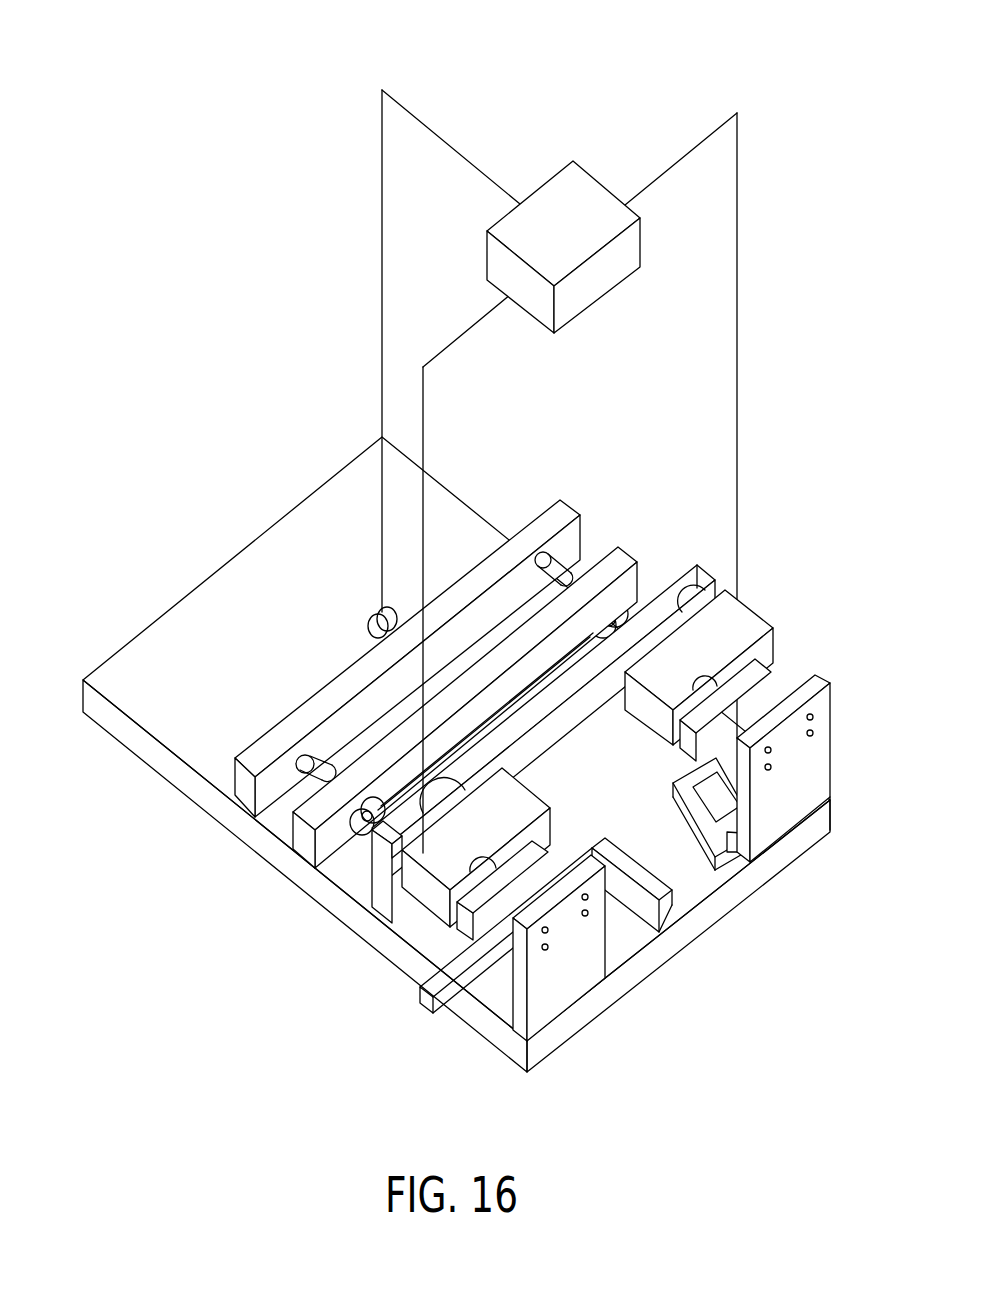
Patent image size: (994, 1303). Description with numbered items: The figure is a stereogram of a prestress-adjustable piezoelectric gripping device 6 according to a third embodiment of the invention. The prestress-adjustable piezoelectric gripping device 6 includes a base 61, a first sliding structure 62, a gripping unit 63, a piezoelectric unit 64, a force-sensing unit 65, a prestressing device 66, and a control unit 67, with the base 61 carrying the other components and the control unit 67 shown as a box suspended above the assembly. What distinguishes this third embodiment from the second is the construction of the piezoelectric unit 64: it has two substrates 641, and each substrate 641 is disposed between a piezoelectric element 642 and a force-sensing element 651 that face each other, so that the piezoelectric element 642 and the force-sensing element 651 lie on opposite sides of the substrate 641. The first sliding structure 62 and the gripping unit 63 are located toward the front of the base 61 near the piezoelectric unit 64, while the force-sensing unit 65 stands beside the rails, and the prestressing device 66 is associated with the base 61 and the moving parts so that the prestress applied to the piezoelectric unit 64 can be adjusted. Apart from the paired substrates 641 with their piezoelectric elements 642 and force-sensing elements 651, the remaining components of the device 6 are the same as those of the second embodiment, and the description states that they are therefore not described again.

The prestress-adjustable piezoelectric gripping device 6 is at (178, 147).
The base 61 is at (137, 702).
The first sliding structure 62 is at (737, 760).
The gripping unit 63 is at (715, 852).
The piezoelectric unit 64 is at (537, 882).
The substrate 641 is at (488, 918).
The piezoelectric element 642 is at (428, 933).
The force-sensing unit 65 is at (402, 873).
The force-sensing element 651 is at (740, 612).
The prestressing device 66 is at (277, 850).
The control unit 67 is at (571, 200).